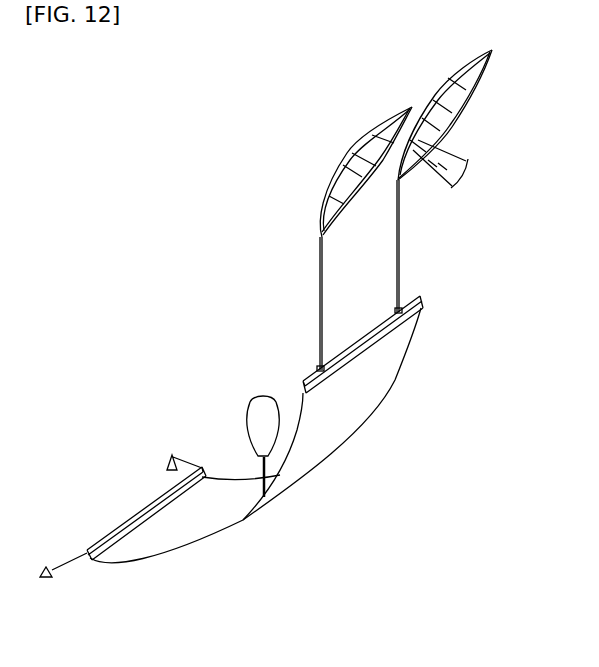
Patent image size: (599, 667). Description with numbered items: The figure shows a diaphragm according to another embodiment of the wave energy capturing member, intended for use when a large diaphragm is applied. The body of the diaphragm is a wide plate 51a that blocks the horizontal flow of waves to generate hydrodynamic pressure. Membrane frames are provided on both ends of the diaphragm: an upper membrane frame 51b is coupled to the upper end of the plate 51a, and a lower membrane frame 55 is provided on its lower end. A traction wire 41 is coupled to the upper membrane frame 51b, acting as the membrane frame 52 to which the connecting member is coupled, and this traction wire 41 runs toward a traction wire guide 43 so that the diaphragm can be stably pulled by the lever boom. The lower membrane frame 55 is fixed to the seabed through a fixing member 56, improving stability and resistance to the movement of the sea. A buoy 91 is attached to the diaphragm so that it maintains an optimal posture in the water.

The traction wire guide 43 is at (383, 117).
The traction wire 41 is at (398, 238).
The membrane frame 52 is at (403, 313).
The upper membrane frame 51b is at (378, 337).
The plate 51a is at (180, 553).
The lower membrane frame 55 is at (127, 520).
The fixing member 56 is at (45, 580).
The buoy 91 is at (260, 392).